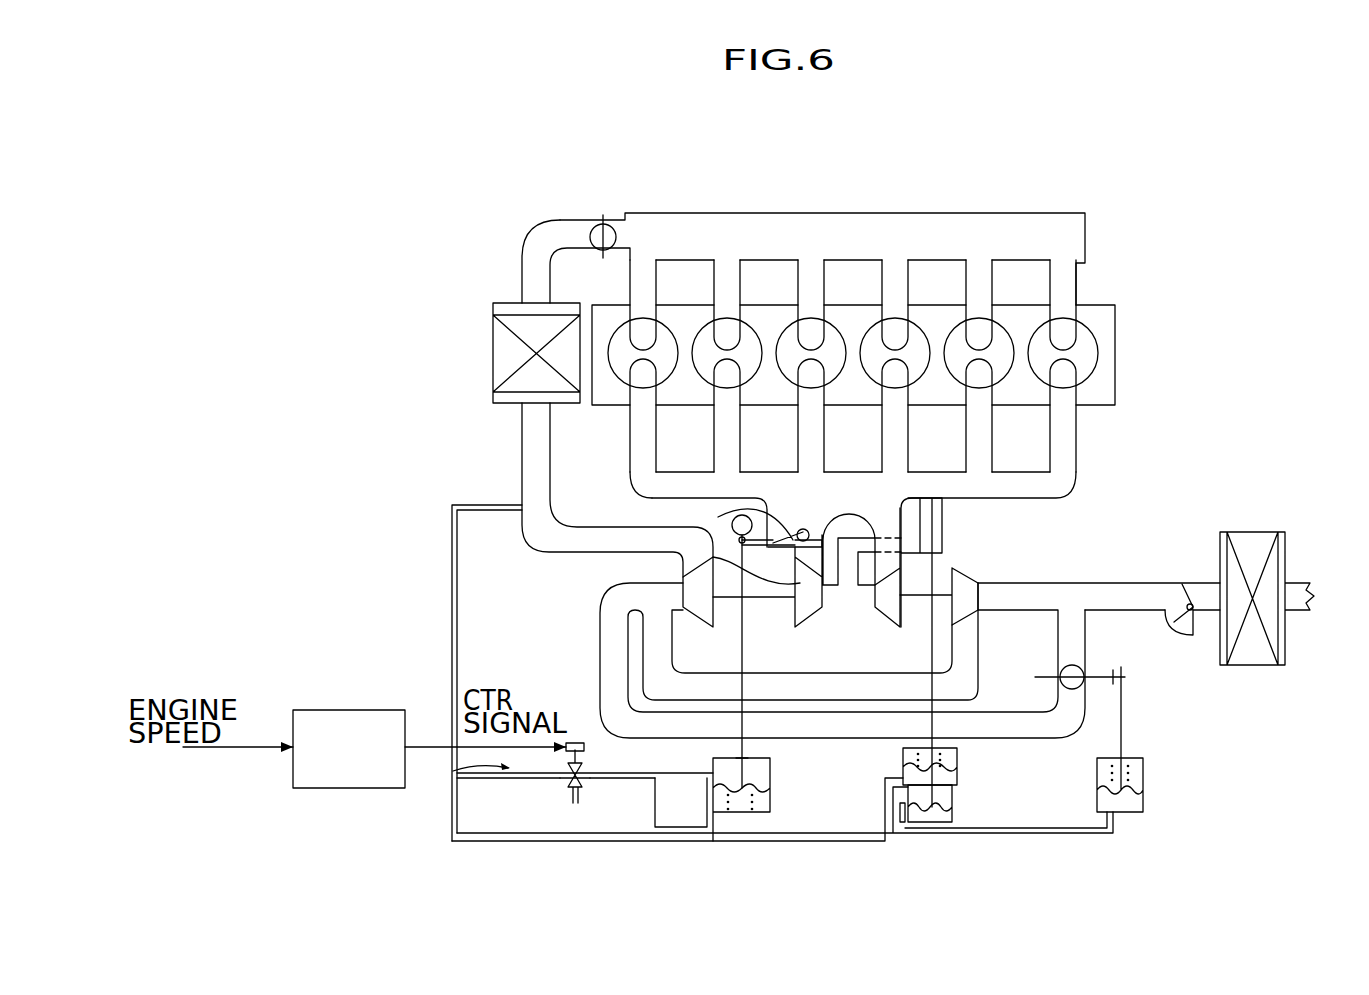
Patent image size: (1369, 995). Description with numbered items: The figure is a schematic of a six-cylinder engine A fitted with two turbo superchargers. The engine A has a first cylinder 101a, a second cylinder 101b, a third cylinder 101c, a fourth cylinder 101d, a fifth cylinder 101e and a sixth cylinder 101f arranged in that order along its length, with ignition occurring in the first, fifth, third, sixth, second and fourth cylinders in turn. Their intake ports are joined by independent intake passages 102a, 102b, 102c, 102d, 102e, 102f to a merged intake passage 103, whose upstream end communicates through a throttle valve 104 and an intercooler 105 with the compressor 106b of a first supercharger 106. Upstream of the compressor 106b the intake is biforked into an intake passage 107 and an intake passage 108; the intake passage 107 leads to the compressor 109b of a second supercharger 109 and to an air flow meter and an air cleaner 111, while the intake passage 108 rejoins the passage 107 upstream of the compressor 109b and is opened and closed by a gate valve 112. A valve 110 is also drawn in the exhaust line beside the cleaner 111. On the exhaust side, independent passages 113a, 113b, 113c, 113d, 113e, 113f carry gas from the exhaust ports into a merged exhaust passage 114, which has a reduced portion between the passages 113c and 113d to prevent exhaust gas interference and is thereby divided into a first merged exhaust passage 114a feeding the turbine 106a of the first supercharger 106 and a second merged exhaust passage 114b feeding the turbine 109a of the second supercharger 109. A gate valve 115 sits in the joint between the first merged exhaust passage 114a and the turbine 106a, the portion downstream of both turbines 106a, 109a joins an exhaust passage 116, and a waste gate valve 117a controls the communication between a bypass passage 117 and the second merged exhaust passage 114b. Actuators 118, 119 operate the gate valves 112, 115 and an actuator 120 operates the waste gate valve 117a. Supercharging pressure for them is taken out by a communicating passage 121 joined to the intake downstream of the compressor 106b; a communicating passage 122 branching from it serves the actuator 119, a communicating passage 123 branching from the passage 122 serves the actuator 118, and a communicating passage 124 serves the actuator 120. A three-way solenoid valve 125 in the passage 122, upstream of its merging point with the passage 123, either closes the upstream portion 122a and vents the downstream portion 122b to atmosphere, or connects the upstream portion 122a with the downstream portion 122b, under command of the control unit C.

The engine A is at (955, 213).
The control unit C is at (352, 710).
The first cylinder 101a is at (626, 323).
The second cylinder 101b is at (710, 325).
The third cylinder 101c is at (794, 325).
The fourth cylinder 101d is at (878, 325).
The fifth cylinder 101e is at (962, 325).
The sixth cylinder 101f is at (1046, 325).
The independent intake passage 102a is at (645, 273).
The independent intake passage 102b is at (729, 273).
The independent intake passage 102c is at (813, 273).
The independent intake passage 102d is at (897, 273).
The independent intake passage 102e is at (981, 273).
The independent intake passage 102f is at (1065, 273).
The merged intake passage 103 is at (637, 227).
The throttle valve 104 is at (590, 238).
The intercooler 105 is at (503, 368).
The first supercharger 106 is at (760, 603).
The turbine 106a is at (688, 560).
The compressor 106b is at (700, 607).
The intake passage 107 is at (930, 677).
The intake passage 108 is at (862, 723).
The second supercharger 109 is at (940, 578).
The turbine 109a is at (890, 605).
The compressor 109b is at (978, 583).
The exhaust valve 110 is at (1168, 595).
The air cleaner 111 is at (1255, 545).
The gate valve 112 is at (1058, 662).
The independent exhaust passage 113a is at (632, 436).
The independent exhaust passage 113b is at (714, 452).
The independent exhaust passage 113c is at (798, 452).
The independent exhaust passage 113d is at (882, 452).
The independent exhaust passage 113e is at (966, 452).
The independent exhaust passage 113f is at (1050, 455).
The merged exhaust passage 114 is at (655, 500).
The first merged exhaust passage 114a is at (633, 476).
The second merged exhaust passage 114b is at (960, 490).
The gate valve 115 is at (718, 517).
The exhaust passage 116 is at (843, 680).
The bypass passage 117 is at (912, 543).
The waste gate valve 117a is at (985, 500).
The actuator 118 is at (1143, 800).
The actuator 119 is at (715, 778).
The actuator 120 is at (947, 778).
The communicating passage 121 is at (458, 640).
The communicating passage 122 is at (452, 775).
The upstream portion 122a is at (493, 780).
The downstream portion 122b is at (610, 780).
The communicating passage 123 is at (832, 817).
The communicating passage 124 is at (902, 822).
The three-way solenoid valve 125 is at (573, 795).